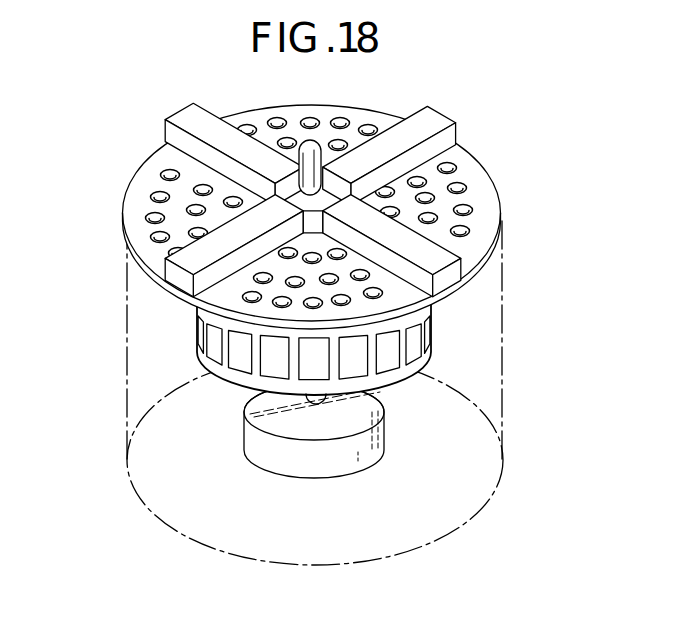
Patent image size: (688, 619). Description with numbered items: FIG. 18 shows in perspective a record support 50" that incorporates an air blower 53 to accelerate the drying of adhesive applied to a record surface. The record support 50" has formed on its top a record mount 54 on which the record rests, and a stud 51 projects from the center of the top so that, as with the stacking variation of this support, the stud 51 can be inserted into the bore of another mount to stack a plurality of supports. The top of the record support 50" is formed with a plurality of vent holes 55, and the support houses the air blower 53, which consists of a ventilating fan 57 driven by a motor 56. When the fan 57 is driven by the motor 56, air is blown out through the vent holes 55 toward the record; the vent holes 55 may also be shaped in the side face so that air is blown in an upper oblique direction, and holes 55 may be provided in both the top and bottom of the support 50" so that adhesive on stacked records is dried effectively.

The record support 50 is at (118, 351).
The stud 51 is at (309, 141).
The air blower 53 is at (460, 369).
The record mount 54 is at (401, 133).
The vent holes 55 is at (437, 217).
The motor 56 is at (384, 442).
The ventilating fan 57 is at (427, 337).